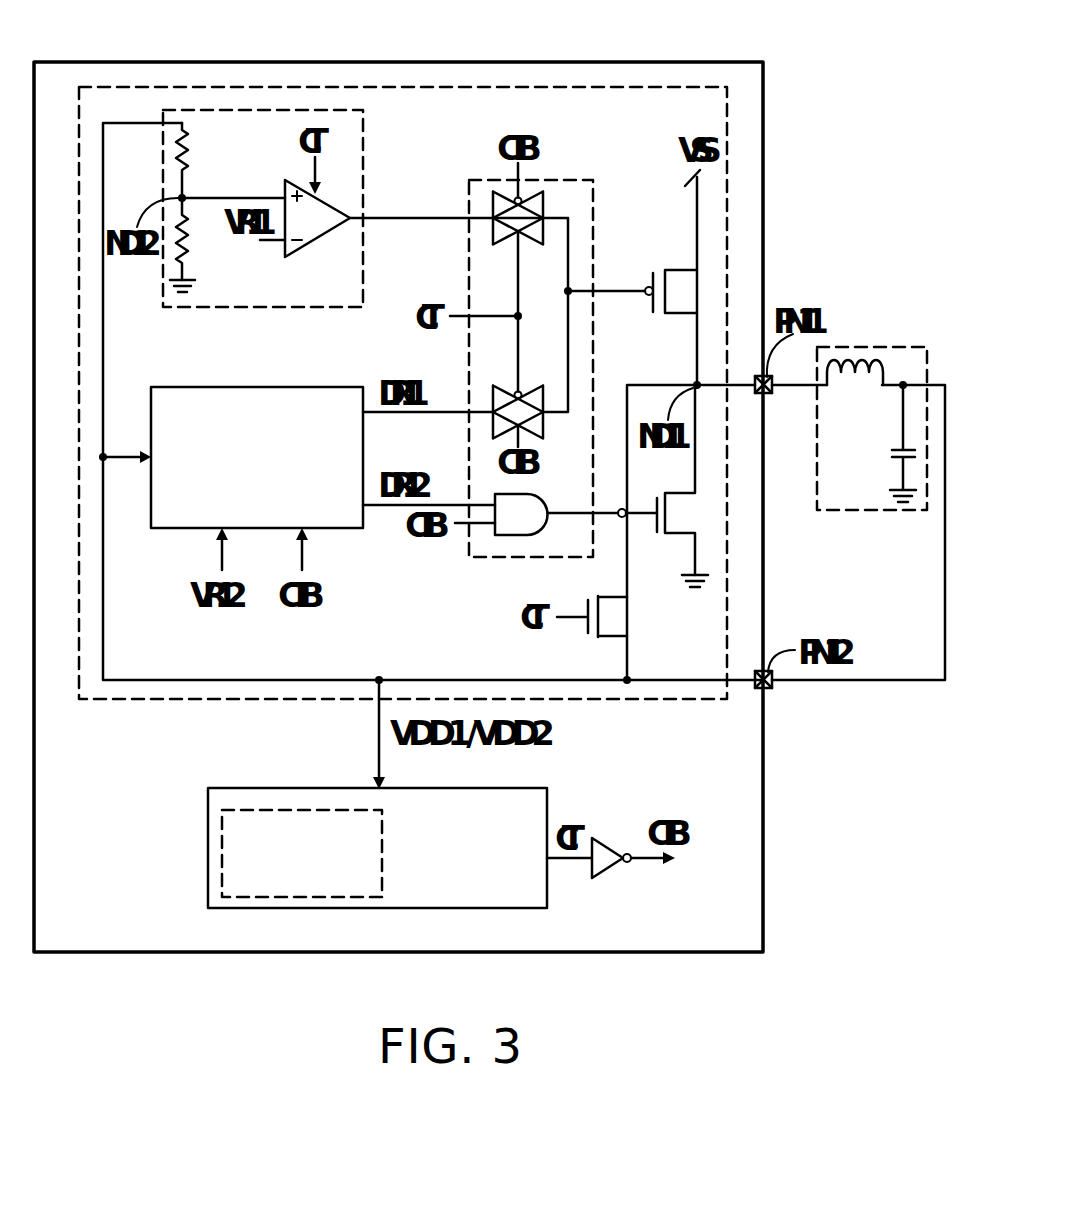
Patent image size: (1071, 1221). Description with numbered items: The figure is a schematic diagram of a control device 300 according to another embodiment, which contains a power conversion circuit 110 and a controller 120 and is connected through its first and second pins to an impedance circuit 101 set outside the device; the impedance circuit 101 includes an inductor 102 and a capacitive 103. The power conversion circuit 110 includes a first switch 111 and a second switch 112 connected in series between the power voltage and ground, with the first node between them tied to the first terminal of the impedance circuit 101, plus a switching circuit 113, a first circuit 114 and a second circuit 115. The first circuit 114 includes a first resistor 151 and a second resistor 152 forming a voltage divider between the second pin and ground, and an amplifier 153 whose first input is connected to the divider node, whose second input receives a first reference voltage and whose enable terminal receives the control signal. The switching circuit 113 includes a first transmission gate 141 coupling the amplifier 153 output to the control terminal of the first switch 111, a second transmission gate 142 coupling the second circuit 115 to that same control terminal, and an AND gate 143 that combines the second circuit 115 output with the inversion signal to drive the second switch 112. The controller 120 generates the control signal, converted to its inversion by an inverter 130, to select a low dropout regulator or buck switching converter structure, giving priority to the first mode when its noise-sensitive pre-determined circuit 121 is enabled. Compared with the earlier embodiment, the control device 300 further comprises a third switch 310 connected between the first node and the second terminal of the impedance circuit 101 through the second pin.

The control device 300 is at (750, 62).
The power conversion circuit 110 is at (128, 85).
The first circuit 114 is at (364, 160).
The first resistor 151 is at (202, 160).
The second resistor 152 is at (203, 245).
The amplifier 153 is at (305, 220).
The switching circuit 113 is at (570, 177).
The first transmission gate 141 is at (527, 277).
The second transmission gate 142 is at (529, 394).
The AND gate 143 is at (490, 504).
The first switch 111 is at (672, 277).
The second switch 112 is at (669, 486).
The third switch 310 is at (611, 617).
The second circuit 115 is at (243, 387).
The impedance circuit 101 is at (883, 347).
The inductor 102 is at (855, 390).
The capacitive 103 is at (881, 443).
The controller 120 is at (228, 788).
The pre-determined circuit 121 is at (222, 866).
The inverter 130 is at (605, 865).